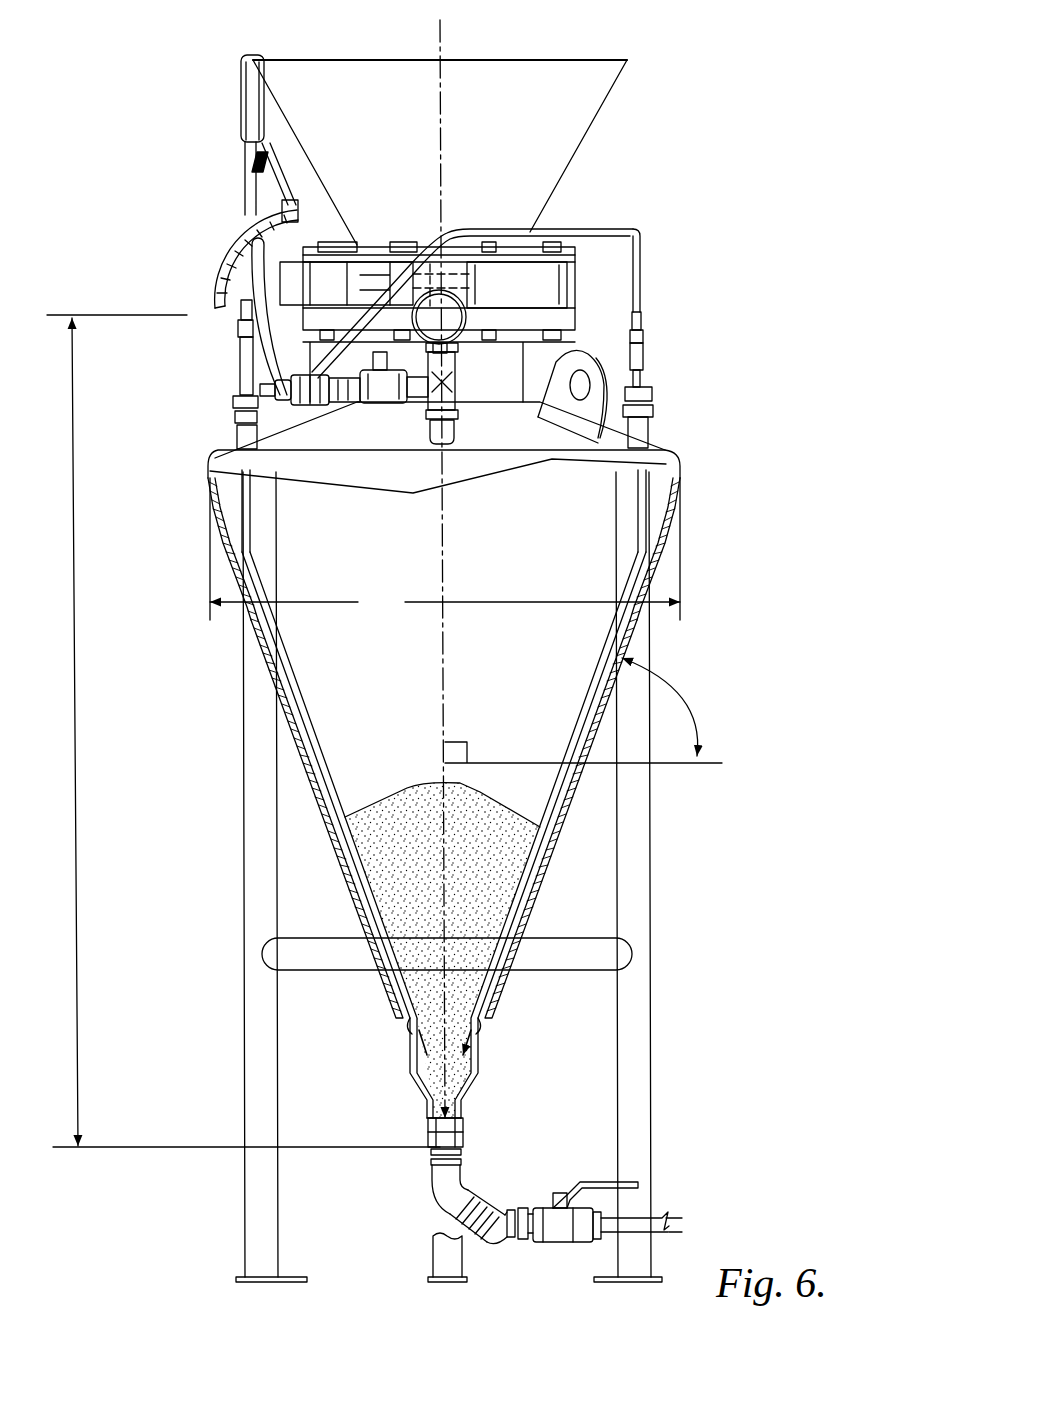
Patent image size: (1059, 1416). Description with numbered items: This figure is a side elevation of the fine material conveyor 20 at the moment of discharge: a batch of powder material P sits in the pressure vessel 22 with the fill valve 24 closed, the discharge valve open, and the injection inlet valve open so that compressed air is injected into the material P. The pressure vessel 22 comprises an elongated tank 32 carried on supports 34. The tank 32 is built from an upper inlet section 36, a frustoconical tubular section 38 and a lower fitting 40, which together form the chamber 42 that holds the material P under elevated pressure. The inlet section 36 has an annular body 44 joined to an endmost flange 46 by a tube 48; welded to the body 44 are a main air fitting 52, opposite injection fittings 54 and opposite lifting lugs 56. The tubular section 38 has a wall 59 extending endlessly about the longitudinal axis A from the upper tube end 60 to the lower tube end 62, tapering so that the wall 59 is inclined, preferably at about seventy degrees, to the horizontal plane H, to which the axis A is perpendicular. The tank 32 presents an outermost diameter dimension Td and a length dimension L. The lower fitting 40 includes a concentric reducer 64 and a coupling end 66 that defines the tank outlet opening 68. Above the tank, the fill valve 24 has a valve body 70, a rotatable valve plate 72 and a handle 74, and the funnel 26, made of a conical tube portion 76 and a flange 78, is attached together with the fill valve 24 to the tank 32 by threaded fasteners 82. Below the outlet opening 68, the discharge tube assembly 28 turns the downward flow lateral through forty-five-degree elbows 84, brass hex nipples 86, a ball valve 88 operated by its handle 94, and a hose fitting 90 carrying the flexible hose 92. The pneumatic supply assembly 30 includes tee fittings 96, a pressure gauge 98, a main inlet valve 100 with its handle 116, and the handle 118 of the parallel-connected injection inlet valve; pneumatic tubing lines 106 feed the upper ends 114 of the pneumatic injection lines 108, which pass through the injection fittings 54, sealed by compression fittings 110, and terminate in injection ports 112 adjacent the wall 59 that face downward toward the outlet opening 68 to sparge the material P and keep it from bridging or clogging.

The fine material conveyor 20 is at (736, 30).
The pressure vessel 22 is at (645, 942).
The fill valve 24 is at (556, 291).
The funnel 26 is at (318, 68).
The discharge tube assembly 28 is at (445, 1203).
The pneumatic supply assembly 30 is at (455, 396).
The tank 32 is at (682, 483).
The supports 34 is at (640, 1024).
The upper inlet section 36 is at (640, 440).
The tubular section 38 is at (640, 540).
The lower fitting 40 is at (423, 1093).
The chamber 42 is at (232, 540).
The annular body 44 is at (295, 470).
The endmost flange 46 is at (570, 318).
The tube 48 is at (518, 383).
The main air fitting 52 is at (447, 458).
The injection fittings 54 is at (245, 432).
The lifting lugs 56 is at (583, 410).
The wall 59 is at (636, 622).
The upper tube end 60 is at (712, 515).
The lower tube end 62 is at (385, 1067).
The concentric reducer 64 is at (478, 1065).
The coupling end 66 is at (462, 1130).
The tank outlet opening 68 is at (405, 1163).
The valve body 70 is at (535, 272).
The rotatable valve plate 72 is at (499, 238).
The handle 74 is at (242, 108).
The conical tube portion 76 is at (603, 65).
The flange 78 is at (572, 248).
The threaded fasteners 82 is at (401, 244).
The 45-degree elbows 84 is at (445, 1183).
The brass hex nipples 86 is at (515, 1207).
The ball valve 88 is at (567, 1243).
The hose fitting 90 is at (640, 1214).
The flexible hose 92 is at (768, 1226).
The handle 94 is at (601, 1182).
The tee fittings 96 is at (455, 378).
The pressure gauge 98 is at (447, 292).
The main inlet valve 100 is at (400, 418).
The pneumatic tubing lines 106 is at (300, 240).
The pneumatic injection lines 108 is at (640, 548).
The compression fittings 110 is at (240, 398).
The injection port 112 is at (410, 1042).
The upper end 114 is at (245, 330).
The handle 116 is at (372, 395).
The handle 118 is at (300, 376).
The longitudinal axis A is at (447, 566).
The outermost diameter dimension Td is at (445, 549).
The length dimension L is at (243, 731).
The horizontal plane H is at (677, 767).
The powder material P is at (387, 851).